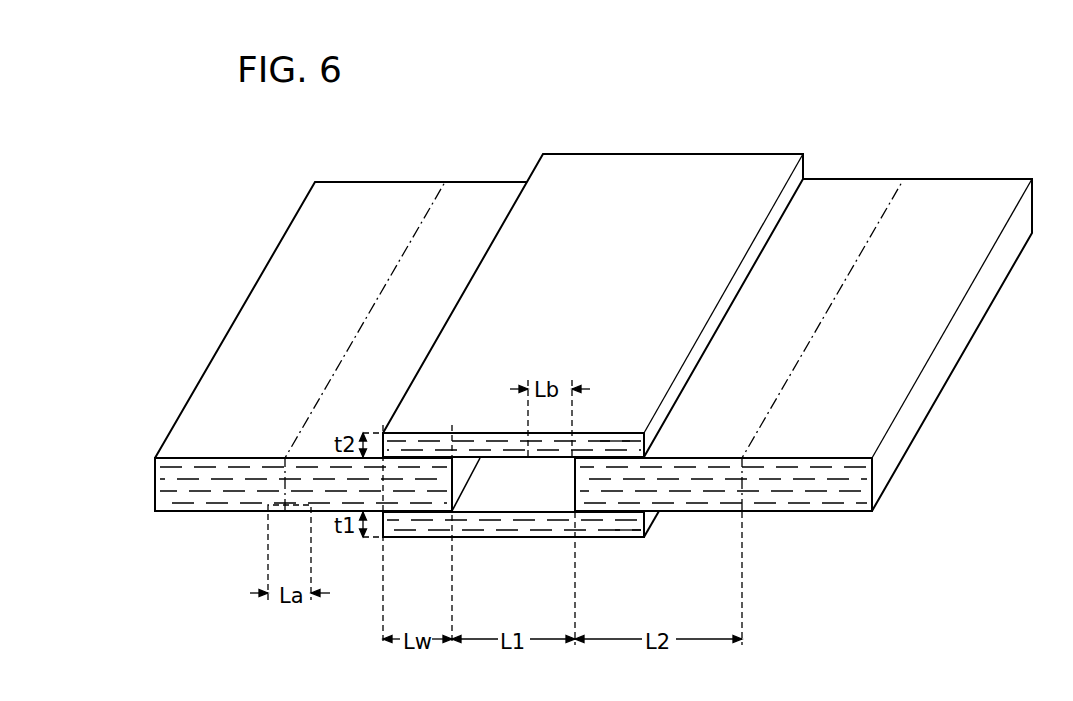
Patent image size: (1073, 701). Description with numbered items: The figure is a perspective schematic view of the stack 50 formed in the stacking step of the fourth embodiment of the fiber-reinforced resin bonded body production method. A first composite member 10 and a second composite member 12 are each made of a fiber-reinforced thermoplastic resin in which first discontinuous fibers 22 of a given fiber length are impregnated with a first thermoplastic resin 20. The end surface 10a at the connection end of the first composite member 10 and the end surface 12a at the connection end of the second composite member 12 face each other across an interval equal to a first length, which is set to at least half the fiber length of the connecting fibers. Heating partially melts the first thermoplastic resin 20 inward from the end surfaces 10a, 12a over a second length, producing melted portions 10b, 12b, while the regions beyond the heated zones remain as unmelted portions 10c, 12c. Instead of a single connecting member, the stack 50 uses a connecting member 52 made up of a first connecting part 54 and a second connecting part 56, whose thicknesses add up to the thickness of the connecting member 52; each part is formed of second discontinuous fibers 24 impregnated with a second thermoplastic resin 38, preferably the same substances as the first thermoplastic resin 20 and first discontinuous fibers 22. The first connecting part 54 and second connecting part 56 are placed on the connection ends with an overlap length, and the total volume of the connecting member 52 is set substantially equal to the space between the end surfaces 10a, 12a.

The first composite member 10 is at (376, 182).
The second composite member 12 is at (965, 183).
The end surface 10a is at (467, 468).
The melted portion 10b is at (312, 457).
The unmelted portion 10c is at (232, 458).
The end surface 12a is at (573, 483).
The melted portion 12b is at (717, 457).
The unmelted portion 12c is at (836, 457).
The first thermoplastic resin 20 is at (195, 500).
The first discontinuous fiber 22 is at (227, 479).
The second discontinuous fiber 24 is at (485, 444).
The second thermoplastic resin 38 is at (457, 443).
The stack 50 is at (821, 127).
The connecting member 52 is at (656, 586).
The first connecting part 54 is at (628, 523).
The second connecting part 56 is at (607, 452).